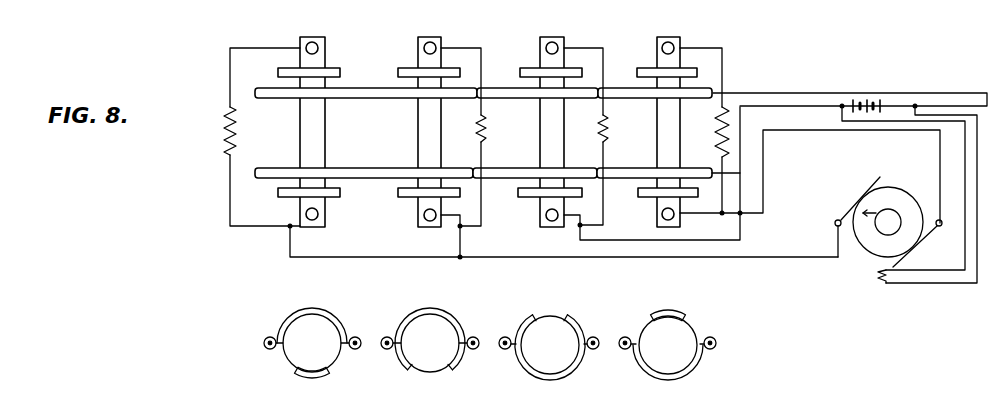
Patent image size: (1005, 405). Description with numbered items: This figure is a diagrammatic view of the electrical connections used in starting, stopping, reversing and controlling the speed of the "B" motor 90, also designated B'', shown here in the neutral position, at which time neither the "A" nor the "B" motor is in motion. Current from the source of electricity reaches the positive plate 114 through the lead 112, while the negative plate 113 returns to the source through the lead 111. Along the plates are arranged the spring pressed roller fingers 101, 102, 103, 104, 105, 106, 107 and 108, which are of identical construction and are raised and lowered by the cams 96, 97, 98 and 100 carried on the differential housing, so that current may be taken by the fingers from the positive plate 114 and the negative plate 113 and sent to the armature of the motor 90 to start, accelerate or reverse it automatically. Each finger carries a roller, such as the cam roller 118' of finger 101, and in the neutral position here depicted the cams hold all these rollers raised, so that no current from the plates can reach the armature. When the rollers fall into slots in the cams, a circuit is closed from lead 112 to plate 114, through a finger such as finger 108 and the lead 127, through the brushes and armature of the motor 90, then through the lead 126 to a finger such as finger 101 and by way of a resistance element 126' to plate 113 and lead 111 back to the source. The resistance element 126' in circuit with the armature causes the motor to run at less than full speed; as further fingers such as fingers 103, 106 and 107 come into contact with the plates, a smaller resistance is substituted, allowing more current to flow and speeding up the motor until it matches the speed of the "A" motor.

The "B" motor 90 is at (888, 222).
The "B" motor B'' is at (888, 211).
The cam 96 is at (312, 332).
The cam 97 is at (430, 307).
The cam 98 is at (550, 333).
The cam 100 is at (668, 353).
The spring pressed roller finger 101 is at (327, 74).
The spring pressed roller finger 102 is at (412, 69).
The spring pressed roller finger 103 is at (565, 73).
The spring pressed roller finger 104 is at (689, 62).
The spring pressed roller finger 105 is at (334, 191).
The spring pressed roller finger 106 is at (410, 198).
The spring pressed roller finger 107 is at (532, 196).
The spring pressed roller finger 108 is at (651, 194).
The lead 111 is at (735, 94).
The lead 112 is at (767, 107).
The negative plate 113 is at (619, 84).
The positive plate 114 is at (627, 163).
The cam roller 118' is at (256, 342).
The lead 126 is at (564, 245).
The resistance element 126' is at (262, 137).
The lead 127 is at (800, 132).